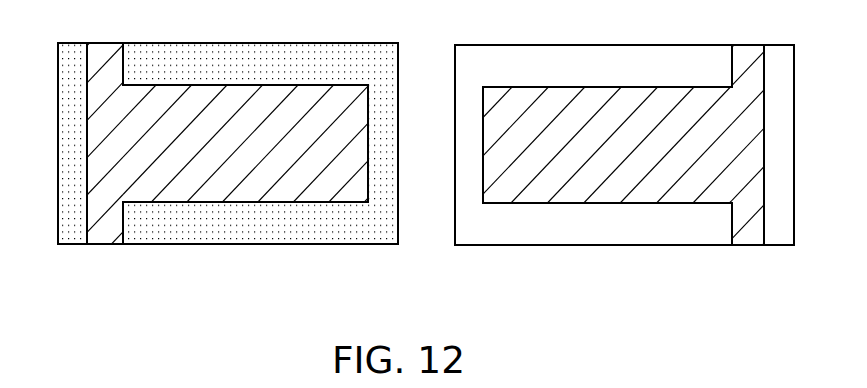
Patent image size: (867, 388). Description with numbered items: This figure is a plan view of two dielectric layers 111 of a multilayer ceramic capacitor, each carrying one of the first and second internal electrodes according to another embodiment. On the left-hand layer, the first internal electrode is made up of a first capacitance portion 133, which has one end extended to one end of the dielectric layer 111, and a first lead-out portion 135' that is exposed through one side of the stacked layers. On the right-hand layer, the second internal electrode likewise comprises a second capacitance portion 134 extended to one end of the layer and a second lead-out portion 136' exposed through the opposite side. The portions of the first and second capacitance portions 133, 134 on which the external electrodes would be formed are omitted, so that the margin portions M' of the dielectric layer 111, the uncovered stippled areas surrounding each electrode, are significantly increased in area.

The dielectric layer 111 is at (319, 227).
The first capacitance portion 133 is at (232, 160).
The second capacitance portion 134 is at (622, 163).
The first lead-out portion 135' is at (127, 183).
The second lead-out portion 136' is at (730, 184).
The margin portion M' is at (72, 183).